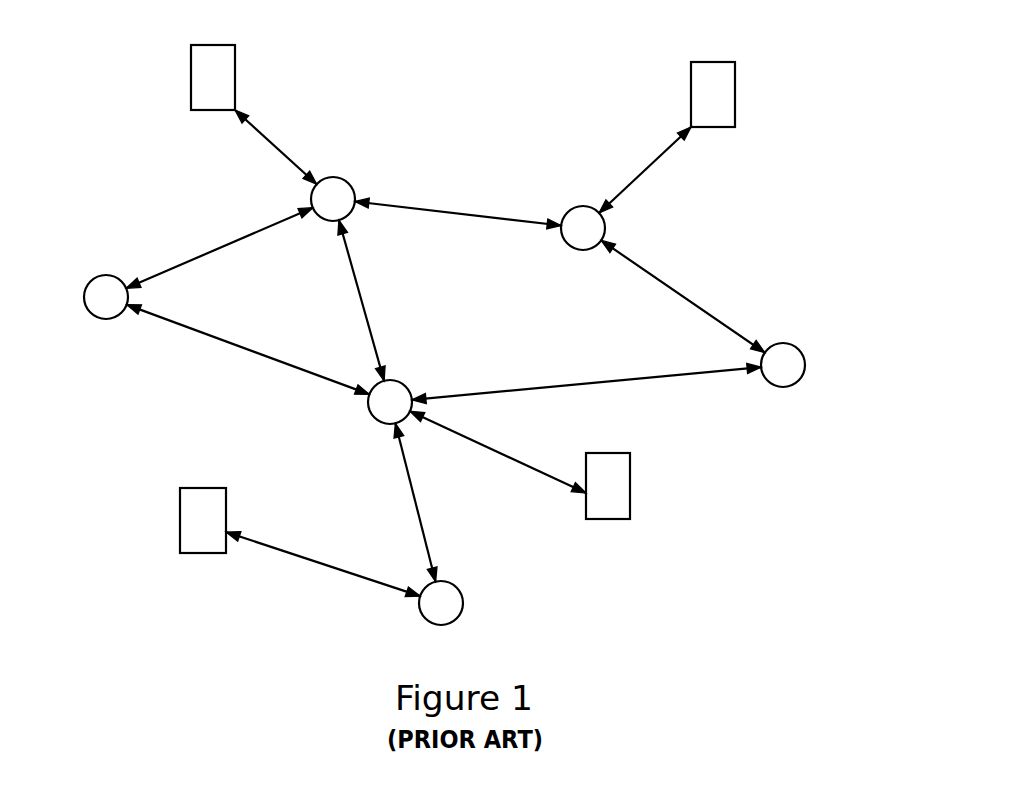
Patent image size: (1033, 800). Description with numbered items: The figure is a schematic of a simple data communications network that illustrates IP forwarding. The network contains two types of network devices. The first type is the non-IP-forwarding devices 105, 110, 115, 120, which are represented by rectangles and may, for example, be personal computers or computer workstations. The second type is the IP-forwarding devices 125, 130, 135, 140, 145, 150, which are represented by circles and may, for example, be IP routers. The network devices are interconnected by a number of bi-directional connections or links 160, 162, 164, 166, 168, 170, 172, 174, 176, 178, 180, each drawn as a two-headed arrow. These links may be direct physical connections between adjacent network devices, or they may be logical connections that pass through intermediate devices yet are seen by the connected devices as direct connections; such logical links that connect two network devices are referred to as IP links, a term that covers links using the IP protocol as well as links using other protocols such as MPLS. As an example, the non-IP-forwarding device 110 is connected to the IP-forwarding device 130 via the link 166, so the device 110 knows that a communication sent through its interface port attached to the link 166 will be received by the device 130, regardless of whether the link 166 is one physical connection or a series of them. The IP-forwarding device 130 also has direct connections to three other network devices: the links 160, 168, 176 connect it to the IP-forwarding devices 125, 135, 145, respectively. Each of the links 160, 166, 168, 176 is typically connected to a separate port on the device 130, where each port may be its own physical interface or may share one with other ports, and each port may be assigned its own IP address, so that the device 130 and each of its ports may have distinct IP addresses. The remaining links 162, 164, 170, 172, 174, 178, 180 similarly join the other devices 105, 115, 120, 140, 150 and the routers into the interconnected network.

The non-IP-forwarding device 105 is at (178, 543).
The non-IP-forwarding device 110 is at (191, 67).
The non-IP-forwarding device 115 is at (735, 90).
The non-IP-forwarding device 120 is at (630, 497).
The IP-forwarding device 125 is at (82, 302).
The IP-forwarding device 130 is at (338, 177).
The IP-forwarding device 135 is at (393, 385).
The IP-forwarding device 140 is at (465, 603).
The IP-forwarding device 145 is at (580, 207).
The IP-forwarding device 150 is at (808, 368).
The link 160 is at (222, 240).
The link 162 is at (233, 348).
The link 164 is at (282, 550).
The link 166 is at (273, 137).
The link 168 is at (347, 268).
The link 170 is at (405, 482).
The link 172 is at (480, 450).
The link 174 is at (565, 378).
The link 176 is at (440, 210).
The link 178 is at (645, 167).
The link 180 is at (673, 280).